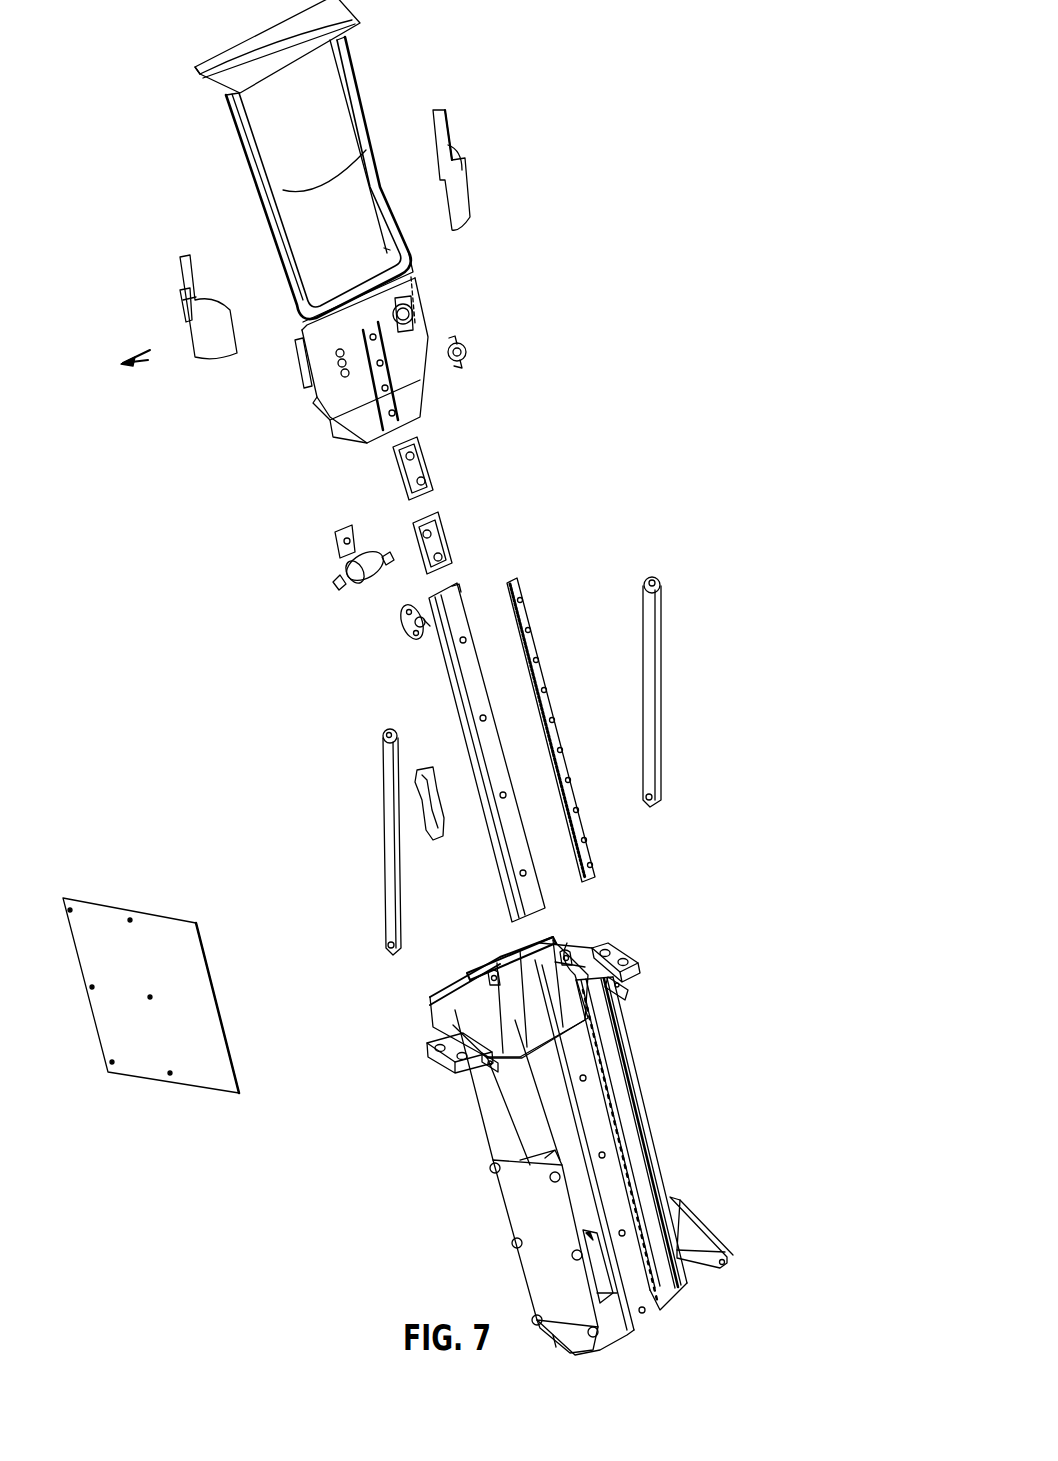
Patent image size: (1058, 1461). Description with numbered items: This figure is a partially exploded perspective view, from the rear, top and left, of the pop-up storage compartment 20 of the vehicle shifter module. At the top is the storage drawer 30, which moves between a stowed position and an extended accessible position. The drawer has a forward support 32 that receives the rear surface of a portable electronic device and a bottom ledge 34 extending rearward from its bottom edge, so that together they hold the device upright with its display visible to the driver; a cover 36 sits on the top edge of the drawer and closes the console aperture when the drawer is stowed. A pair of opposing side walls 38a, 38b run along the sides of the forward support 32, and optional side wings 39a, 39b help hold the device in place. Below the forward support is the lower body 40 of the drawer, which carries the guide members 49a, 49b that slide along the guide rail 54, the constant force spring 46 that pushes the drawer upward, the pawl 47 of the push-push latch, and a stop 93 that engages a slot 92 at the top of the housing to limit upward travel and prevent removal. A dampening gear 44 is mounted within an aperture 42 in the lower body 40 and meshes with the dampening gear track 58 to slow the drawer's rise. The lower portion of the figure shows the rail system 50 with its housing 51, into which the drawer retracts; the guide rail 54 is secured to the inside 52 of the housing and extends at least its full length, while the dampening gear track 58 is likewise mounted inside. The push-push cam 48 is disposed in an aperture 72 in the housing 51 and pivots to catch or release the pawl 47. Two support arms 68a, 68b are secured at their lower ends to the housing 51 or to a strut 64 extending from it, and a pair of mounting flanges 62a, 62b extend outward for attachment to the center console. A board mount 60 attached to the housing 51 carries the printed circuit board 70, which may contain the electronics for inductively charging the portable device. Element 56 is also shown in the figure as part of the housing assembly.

The pop-up storage compartment 20 is at (780, 70).
The storage drawer 30 is at (186, 102).
The forward support 32 is at (320, 102).
The bottom ledge 34 is at (350, 280).
The cover 36 is at (217, 62).
The side wall 38a is at (247, 160).
The side wall 38b is at (362, 143).
The side wing 39a is at (208, 308).
The side wing 39b is at (460, 190).
The lower body 40 is at (336, 382).
The aperture 42 is at (412, 316).
The dampening gear 44 is at (470, 348).
The constant force spring 46 is at (350, 555).
The pawl 47 is at (403, 620).
The push-push cam 48 is at (447, 828).
The guide member 49a is at (425, 440).
The guide member 49b is at (450, 515).
The rail system 50 is at (666, 1072).
The housing 51 is at (490, 1100).
The inside of the housing 52 is at (497, 968).
The guide rail 54 is at (474, 680).
The channel rail 56 is at (632, 1135).
The dampening gear track 58 is at (590, 830).
The board mount 60 is at (518, 1197).
The mounting flange 62a is at (436, 1046).
The mounting flange 62b is at (624, 944).
The strut 64 is at (706, 1231).
The support arm 68a is at (390, 770).
The support arm 68b is at (662, 627).
The printed circuit board 70 is at (181, 932).
The aperture 72 is at (612, 1257).
The slot 92 is at (567, 958).
The stop 93 is at (420, 280).